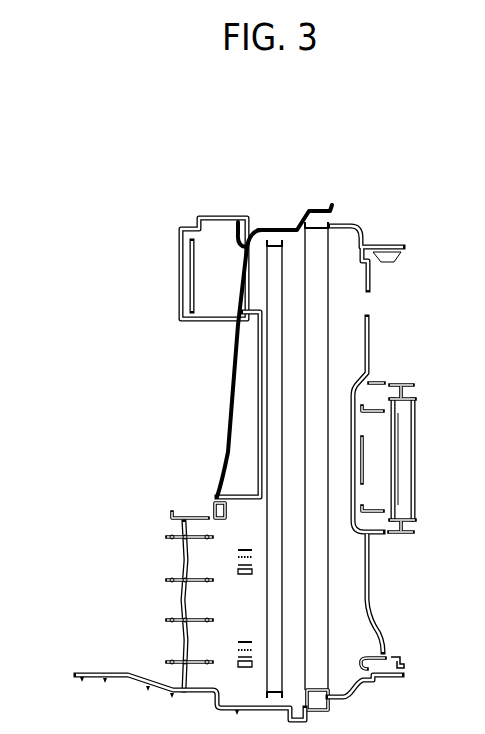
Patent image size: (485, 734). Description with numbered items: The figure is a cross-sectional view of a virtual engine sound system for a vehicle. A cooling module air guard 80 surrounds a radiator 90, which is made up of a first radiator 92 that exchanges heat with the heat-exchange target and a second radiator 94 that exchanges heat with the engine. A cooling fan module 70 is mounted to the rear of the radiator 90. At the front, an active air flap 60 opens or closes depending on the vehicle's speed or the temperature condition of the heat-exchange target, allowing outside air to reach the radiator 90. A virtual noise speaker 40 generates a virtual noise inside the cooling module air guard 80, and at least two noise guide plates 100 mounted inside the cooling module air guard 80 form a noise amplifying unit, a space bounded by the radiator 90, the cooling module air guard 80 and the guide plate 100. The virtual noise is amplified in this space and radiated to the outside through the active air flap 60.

The virtual noise speaker 40 is at (212, 212).
The active air flap 60 is at (131, 601).
The cooling fan module 70 is at (399, 366).
The cooling module air guard 80 is at (235, 371).
The radiator 90 is at (294, 414).
The first radiator 92 is at (275, 240).
The second radiator 94 is at (321, 245).
The noise guide plate 100 is at (252, 422).